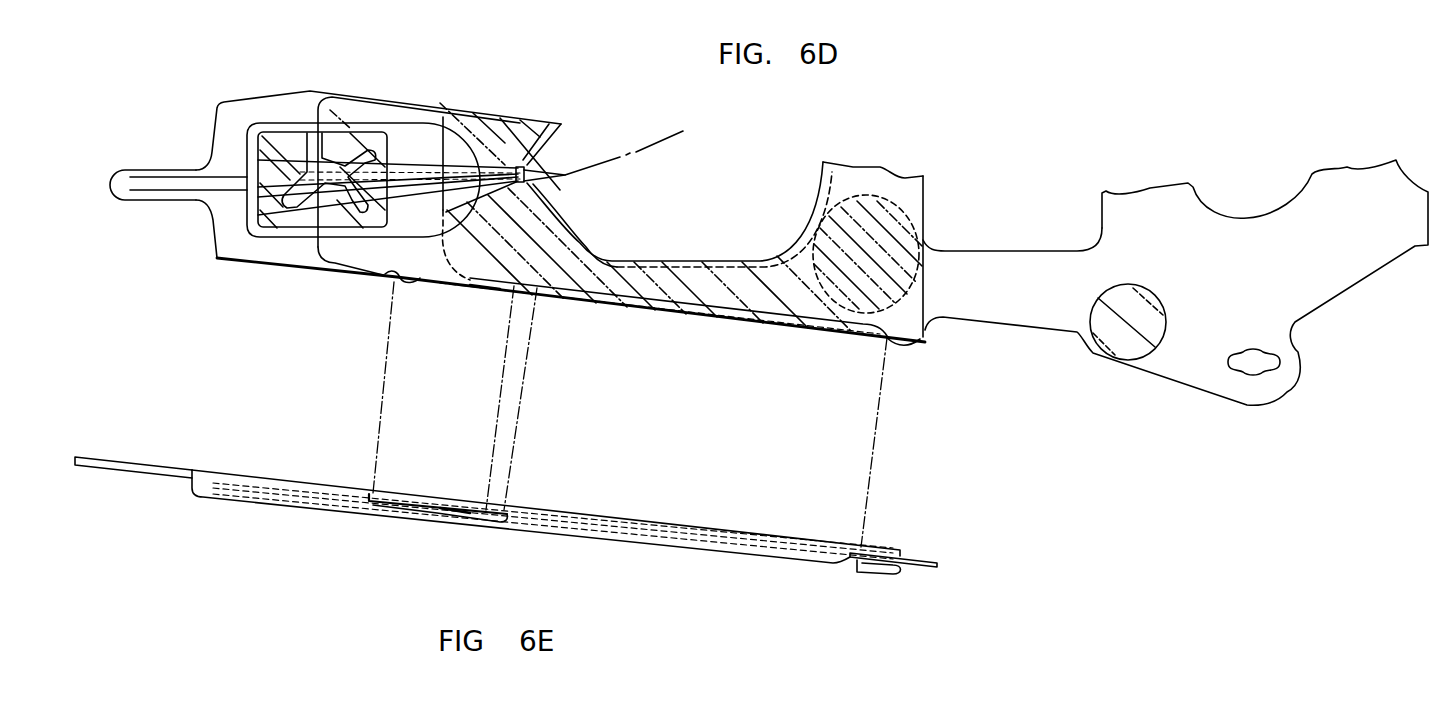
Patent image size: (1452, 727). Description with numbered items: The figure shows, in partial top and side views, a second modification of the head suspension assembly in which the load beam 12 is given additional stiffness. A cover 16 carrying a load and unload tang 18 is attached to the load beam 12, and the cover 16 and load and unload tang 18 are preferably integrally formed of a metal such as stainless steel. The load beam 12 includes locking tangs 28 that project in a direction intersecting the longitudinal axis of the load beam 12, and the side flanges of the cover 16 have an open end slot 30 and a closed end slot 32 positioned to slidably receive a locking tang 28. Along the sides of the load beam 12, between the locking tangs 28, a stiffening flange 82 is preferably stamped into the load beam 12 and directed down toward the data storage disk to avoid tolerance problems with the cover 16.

In FIG. 6D, the load beam 12 is at (1017, 303).
In FIG. 6E, the load beam 12 is at (913, 562).
In FIG. 6E, the cover 16 is at (204, 491).
In FIG. 6D, the load and unload tang 18 is at (133, 187).
In FIG. 6E, the load and unload tang 18 is at (103, 467).
In FIG. 6D, the locking tangs 28 is at (396, 282).
In FIG. 6E, the open end slot 30 is at (861, 566).
In FIG. 6E, the closed end slot 32 is at (496, 522).
In FIG. 6D, the stiffening flange 82 is at (483, 286).
In FIG. 6E, the stiffening flange 82 is at (541, 522).